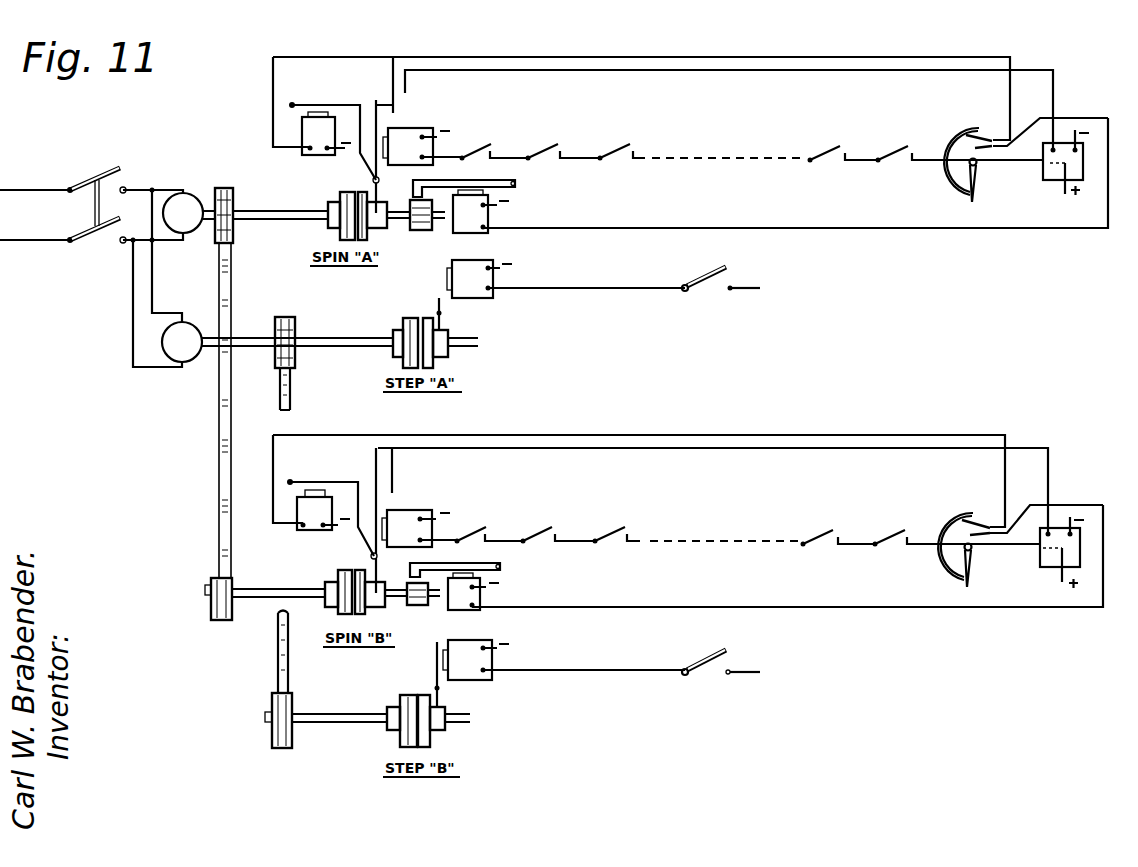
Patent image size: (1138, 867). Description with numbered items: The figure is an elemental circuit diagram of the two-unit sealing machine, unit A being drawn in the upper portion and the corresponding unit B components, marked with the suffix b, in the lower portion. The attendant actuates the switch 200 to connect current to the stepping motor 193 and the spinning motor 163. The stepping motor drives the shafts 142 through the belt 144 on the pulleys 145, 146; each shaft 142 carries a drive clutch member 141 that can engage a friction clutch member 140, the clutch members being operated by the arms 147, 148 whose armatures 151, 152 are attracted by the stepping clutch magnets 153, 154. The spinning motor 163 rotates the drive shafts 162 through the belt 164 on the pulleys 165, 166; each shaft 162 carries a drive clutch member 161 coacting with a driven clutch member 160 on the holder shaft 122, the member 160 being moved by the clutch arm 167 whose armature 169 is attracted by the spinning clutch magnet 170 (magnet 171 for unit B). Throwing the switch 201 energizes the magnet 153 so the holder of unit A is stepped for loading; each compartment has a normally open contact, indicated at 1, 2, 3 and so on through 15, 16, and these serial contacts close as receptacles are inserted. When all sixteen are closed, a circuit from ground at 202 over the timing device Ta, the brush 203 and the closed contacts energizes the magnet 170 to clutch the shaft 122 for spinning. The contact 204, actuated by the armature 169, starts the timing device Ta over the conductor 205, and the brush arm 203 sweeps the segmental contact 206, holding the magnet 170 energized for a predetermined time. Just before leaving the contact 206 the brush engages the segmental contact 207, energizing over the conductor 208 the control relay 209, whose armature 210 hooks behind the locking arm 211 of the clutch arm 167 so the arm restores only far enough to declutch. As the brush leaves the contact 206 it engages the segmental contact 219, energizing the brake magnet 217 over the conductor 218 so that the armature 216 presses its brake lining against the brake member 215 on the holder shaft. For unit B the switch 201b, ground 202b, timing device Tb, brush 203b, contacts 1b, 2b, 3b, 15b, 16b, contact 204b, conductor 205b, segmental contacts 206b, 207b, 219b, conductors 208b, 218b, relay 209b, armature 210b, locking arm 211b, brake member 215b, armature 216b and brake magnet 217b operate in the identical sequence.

The contact 1 is at (494, 149).
The contact 2 is at (563, 149).
The contact 3 is at (622, 149).
The contact 15 is at (843, 151).
The contact 16 is at (960, 151).
The contact 1b is at (489, 534).
The contact 2b is at (558, 533).
The contact 3b is at (620, 533).
The contact 15b is at (838, 536).
The contact 16b is at (957, 536).
The shaft 122 is at (490, 232).
The friction clutch member 140 is at (443, 357).
The drive clutch member 141 is at (401, 323).
The rotatable shaft 142 is at (335, 349).
The belt 144 is at (293, 394).
The pulley 145 is at (280, 318).
The pulley 146 is at (282, 749).
The arm 147 is at (443, 323).
The arm 148 is at (437, 699).
The armature 151 is at (437, 279).
The armature 152 is at (436, 656).
The magnet 153 is at (478, 300).
The magnet 154 is at (495, 658).
The driven clutch member 160 is at (385, 230).
The drive clutch member 161 is at (330, 222).
The shaft 162 is at (258, 223).
The motor 163 is at (192, 193).
The belt 164 is at (218, 270).
The pulley 165 is at (250, 178).
The pulley 166 is at (212, 615).
The arm 167 is at (348, 193).
The armature 169 is at (362, 106).
The magnet 170 is at (412, 129).
The magnet 171 is at (434, 526).
The step motor 193 is at (183, 364).
The switch 200 is at (90, 247).
The switch 201 is at (701, 290).
The switch 201b is at (700, 679).
The ground 202 is at (1066, 173).
The ground 202b is at (1065, 562).
The brush arm 203 is at (980, 180).
The brush arm 203b is at (977, 569).
The contact 204 is at (400, 91).
The contact 204b is at (392, 469).
The conductor 205 is at (767, 73).
The conductor 205b is at (797, 450).
The segmental contact 206 is at (950, 184).
The segmental contact 206b is at (937, 556).
The segmental contact 207 is at (984, 132).
The segmental contact 207b is at (983, 521).
The conductor 208 is at (792, 50).
The conductor 208b is at (760, 423).
The control relay 209 is at (308, 128).
The control relay 209b is at (320, 498).
The armature 210 is at (291, 104).
The armature 210b is at (291, 480).
The locking arm 211 is at (359, 153).
The locking arm 211b is at (352, 526).
The brake member 215 is at (430, 232).
The brake member 215b is at (428, 606).
The armature 216 is at (494, 181).
The armature 216b is at (480, 563).
The brake magnet 217 is at (486, 222).
The brake magnet 217b is at (483, 594).
The conductor 218 is at (790, 229).
The conductor 218b is at (850, 608).
The segmental contact 219 is at (957, 136).
The segmental contact 219b is at (953, 521).
The timing device Ta is at (1082, 166).
The timing device Tb is at (1080, 554).